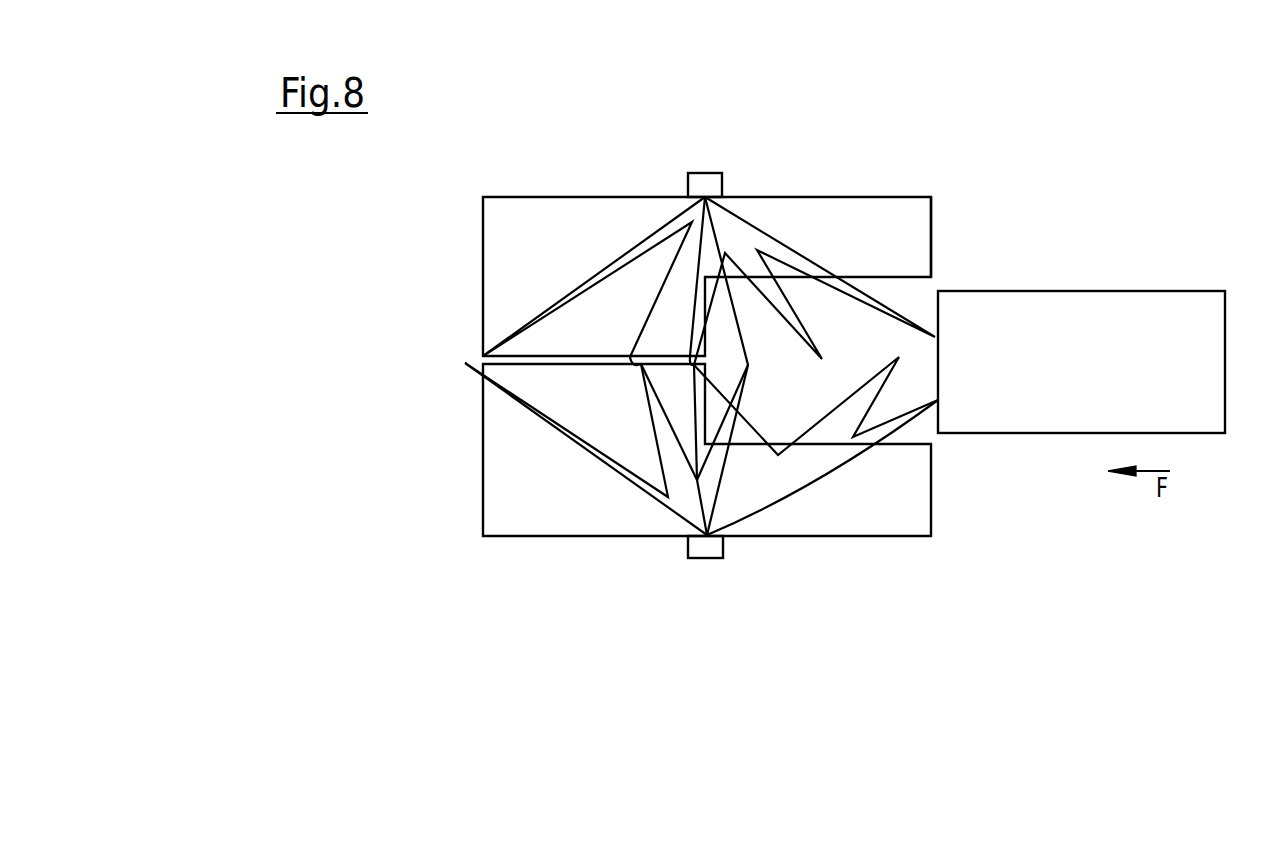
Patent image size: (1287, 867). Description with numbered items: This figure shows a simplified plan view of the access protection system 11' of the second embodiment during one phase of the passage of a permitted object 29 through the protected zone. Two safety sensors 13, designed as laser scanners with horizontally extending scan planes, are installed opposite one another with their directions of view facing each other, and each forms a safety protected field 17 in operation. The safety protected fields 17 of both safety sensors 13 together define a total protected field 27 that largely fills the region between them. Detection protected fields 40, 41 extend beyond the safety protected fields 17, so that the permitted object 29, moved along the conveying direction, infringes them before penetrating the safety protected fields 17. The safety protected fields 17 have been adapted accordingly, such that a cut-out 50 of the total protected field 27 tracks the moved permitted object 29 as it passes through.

The access protection system 11' is at (1059, 149).
The safety sensor 13 is at (702, 180).
The safety protected field 17 is at (848, 212).
The total protected field 27 is at (936, 212).
The permitted object 29 is at (1093, 375).
The detection protected field 40 is at (770, 243).
The detection protected field 41 is at (640, 247).
The cut-out 50 is at (862, 333).